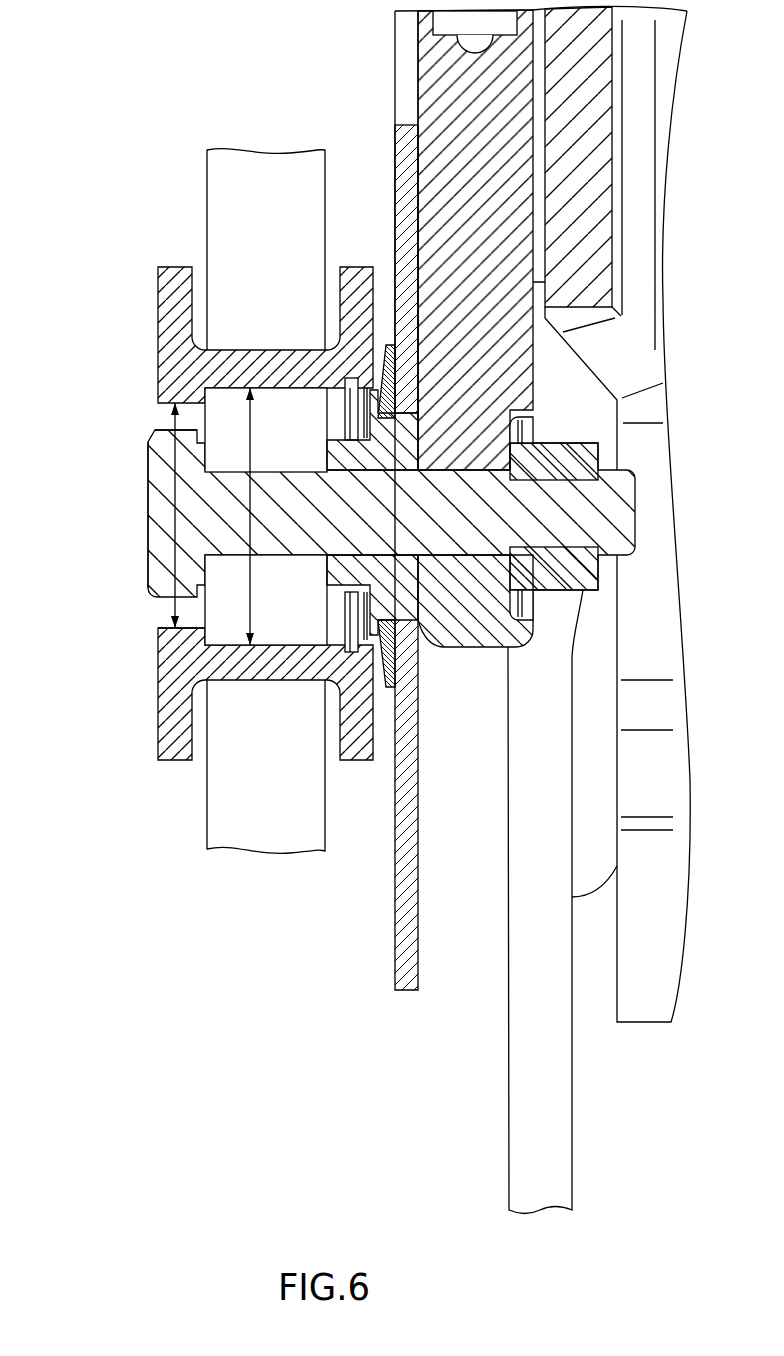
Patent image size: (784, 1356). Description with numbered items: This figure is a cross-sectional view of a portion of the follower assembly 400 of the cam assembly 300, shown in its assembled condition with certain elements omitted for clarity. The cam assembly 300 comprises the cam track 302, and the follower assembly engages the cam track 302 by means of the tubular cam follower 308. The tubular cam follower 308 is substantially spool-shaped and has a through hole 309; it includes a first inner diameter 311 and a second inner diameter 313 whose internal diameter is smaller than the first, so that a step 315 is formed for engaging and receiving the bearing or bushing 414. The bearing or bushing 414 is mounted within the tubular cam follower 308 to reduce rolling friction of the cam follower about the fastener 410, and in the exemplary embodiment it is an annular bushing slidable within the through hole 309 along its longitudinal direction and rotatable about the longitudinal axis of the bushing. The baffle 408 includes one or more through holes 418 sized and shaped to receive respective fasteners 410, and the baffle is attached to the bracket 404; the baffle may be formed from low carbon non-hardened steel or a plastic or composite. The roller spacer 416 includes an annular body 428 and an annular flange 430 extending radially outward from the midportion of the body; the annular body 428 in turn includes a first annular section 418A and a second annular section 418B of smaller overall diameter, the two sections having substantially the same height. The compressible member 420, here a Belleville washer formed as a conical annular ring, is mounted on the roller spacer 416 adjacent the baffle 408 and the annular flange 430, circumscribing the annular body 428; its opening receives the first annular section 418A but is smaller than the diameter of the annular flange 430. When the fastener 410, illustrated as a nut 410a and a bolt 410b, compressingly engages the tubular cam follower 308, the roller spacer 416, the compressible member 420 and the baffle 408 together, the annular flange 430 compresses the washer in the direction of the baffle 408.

The cam assembly 300 is at (115, 108).
The follower assembly 400 is at (478, 609).
The cam track 302 is at (207, 203).
The tubular cam follower 308 is at (158, 735).
The through hole 309 is at (207, 618).
The first inner diameter 311 is at (255, 618).
The second inner diameter 313 is at (175, 545).
The step 315 is at (205, 395).
The bracket 404 is at (427, 78).
The baffle 408 is at (398, 940).
The fastener 410 is at (148, 480).
The nut 410a is at (515, 443).
The bolt 410b is at (148, 535).
The bearing or bushing 414 is at (175, 417).
The roller spacer 416 is at (327, 570).
The through hole 418 is at (410, 422).
The first annular section 418A is at (397, 590).
The second annular section 418B is at (348, 460).
The compressible member 420 is at (388, 343).
The annular body 428 is at (420, 640).
The annular flange 430 is at (387, 623).